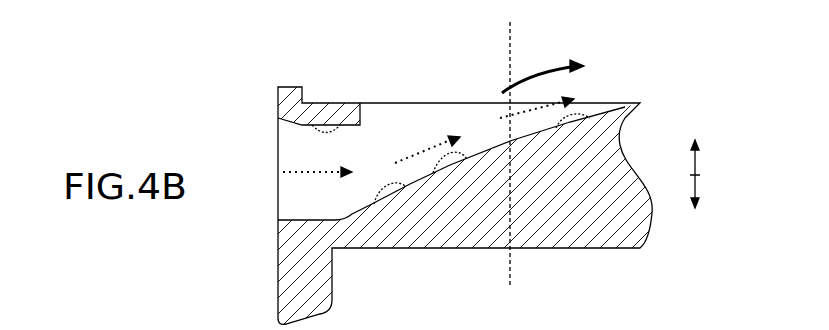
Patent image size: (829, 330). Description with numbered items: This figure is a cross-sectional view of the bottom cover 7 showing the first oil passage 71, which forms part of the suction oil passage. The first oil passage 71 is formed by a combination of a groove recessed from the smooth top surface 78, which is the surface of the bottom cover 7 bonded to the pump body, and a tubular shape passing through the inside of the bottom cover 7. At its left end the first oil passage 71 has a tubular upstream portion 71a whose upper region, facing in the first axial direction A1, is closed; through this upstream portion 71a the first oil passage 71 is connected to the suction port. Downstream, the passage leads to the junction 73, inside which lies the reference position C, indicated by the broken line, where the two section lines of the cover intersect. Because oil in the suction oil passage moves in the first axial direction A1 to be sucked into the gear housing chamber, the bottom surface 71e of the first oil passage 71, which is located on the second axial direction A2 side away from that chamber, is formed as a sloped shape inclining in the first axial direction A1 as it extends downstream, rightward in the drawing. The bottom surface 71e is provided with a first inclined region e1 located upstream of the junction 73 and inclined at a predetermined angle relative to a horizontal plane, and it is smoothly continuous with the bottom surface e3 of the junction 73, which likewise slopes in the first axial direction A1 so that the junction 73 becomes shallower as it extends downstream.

The bottom cover 7 is at (568, 253).
The first oil passage 71 is at (407, 124).
The upstream portion 71a is at (313, 122).
The bottom surface 71e is at (379, 200).
The junction 73 is at (590, 105).
The smooth top surface 78 is at (343, 103).
The first inclined region e1 is at (445, 158).
The bottom surface of the junction e3 is at (590, 120).
The reference position C is at (509, 142).
The first axial direction A1 is at (695, 142).
The second axial direction A2 is at (695, 207).